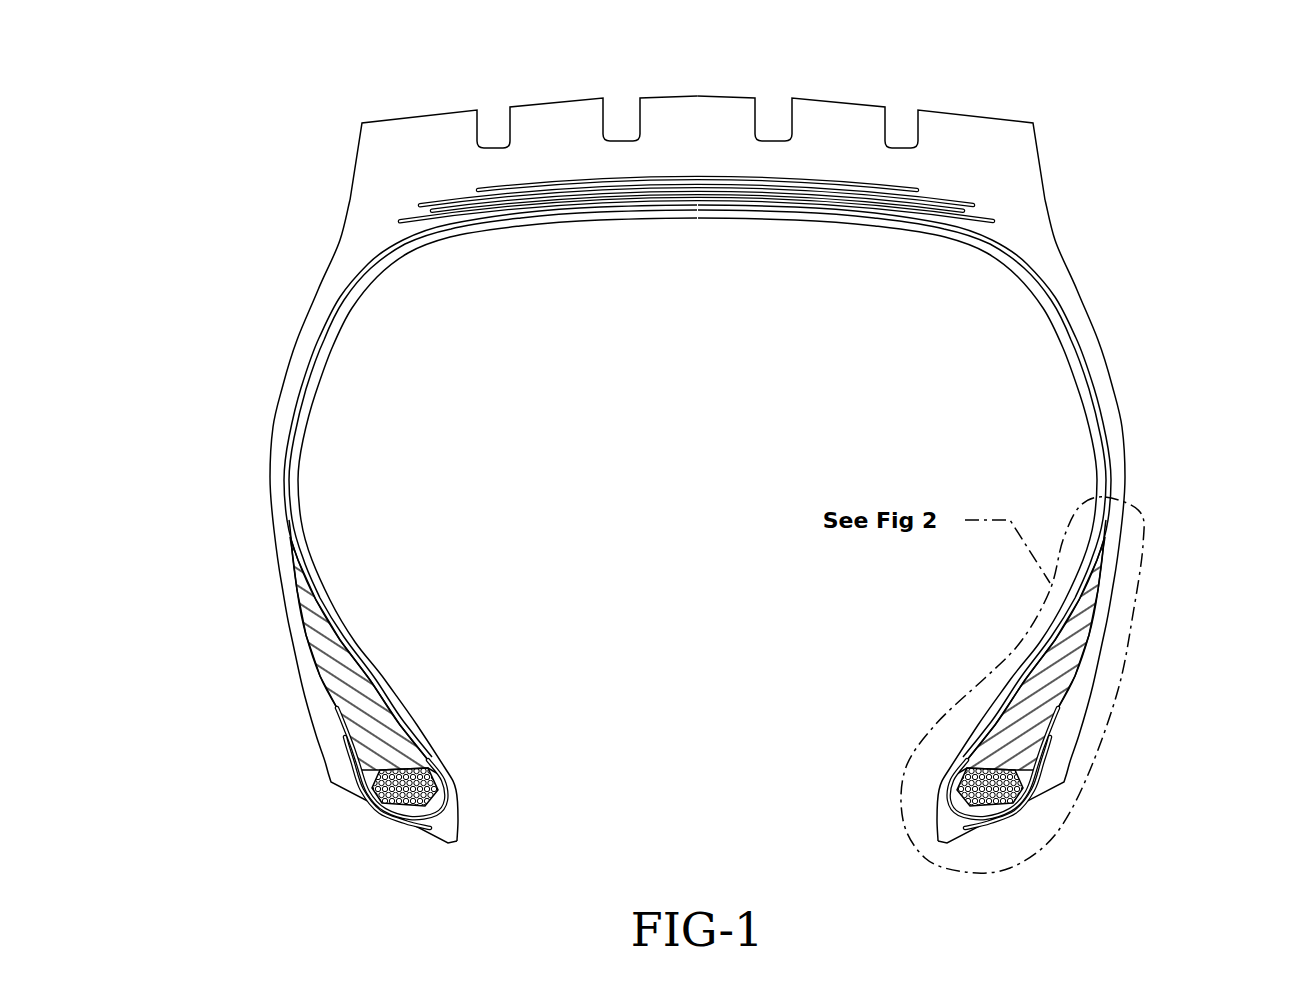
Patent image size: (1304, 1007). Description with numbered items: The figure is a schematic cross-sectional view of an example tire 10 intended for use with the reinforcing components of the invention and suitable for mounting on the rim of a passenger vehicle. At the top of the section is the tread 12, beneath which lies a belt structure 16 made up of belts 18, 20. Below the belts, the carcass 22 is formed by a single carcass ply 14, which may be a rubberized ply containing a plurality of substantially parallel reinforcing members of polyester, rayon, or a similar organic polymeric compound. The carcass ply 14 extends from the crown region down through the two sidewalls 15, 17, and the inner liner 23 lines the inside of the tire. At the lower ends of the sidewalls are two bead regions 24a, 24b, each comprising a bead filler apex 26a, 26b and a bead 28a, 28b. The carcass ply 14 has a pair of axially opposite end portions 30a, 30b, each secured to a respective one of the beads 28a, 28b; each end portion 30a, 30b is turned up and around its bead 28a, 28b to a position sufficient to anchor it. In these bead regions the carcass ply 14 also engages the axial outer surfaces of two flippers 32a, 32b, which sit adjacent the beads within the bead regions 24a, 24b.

The tire 10 is at (694, 439).
The tread 12 is at (697, 107).
The carcass ply 14 is at (437, 243).
The sidewall 15 is at (298, 341).
The belt structure 16 is at (714, 190).
The sidewall 17 is at (1112, 375).
The belt 18 is at (827, 197).
The belt 20 is at (760, 198).
The carcass 22 is at (880, 223).
The inner liner 23 is at (382, 287).
The bead region 24a is at (304, 708).
The bead region 24b is at (1104, 698).
The bead filler apex 26a is at (352, 678).
The bead filler apex 26b is at (1043, 697).
The bead 28a is at (405, 786).
The bead 28b is at (990, 793).
The axial end portion 30a is at (334, 708).
The axial end portion 30b is at (1060, 706).
The flipper 32a is at (366, 788).
The flipper 32b is at (1064, 782).